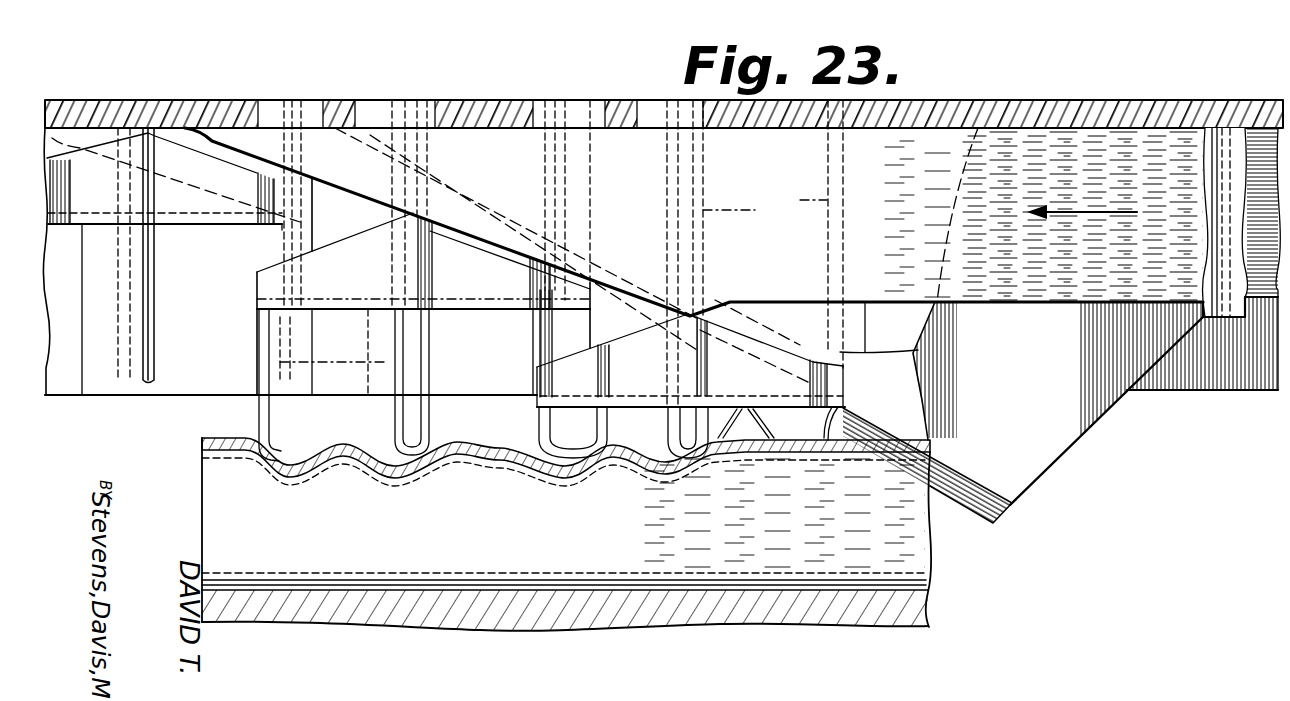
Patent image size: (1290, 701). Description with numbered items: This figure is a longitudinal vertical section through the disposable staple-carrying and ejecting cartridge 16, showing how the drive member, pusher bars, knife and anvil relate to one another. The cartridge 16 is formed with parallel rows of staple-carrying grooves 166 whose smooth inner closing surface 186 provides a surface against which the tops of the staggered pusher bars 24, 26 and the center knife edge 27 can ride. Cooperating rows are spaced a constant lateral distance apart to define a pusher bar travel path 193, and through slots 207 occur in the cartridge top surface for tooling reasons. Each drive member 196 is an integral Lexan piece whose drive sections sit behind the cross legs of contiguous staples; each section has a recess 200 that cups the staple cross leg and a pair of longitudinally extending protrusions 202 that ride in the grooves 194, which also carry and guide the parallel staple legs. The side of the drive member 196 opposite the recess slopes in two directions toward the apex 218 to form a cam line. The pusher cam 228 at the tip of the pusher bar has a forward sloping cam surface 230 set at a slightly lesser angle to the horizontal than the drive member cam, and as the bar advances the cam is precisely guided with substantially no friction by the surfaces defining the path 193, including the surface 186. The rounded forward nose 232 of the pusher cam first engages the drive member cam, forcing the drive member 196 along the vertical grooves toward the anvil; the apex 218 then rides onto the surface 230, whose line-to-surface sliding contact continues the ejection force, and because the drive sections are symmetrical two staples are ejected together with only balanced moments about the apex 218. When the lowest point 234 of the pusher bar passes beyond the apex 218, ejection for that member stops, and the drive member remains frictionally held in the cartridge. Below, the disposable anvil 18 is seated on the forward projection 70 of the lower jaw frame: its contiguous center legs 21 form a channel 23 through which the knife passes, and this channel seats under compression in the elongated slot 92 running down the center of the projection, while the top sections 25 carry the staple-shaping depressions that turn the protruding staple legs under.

The cartridge 16 is at (1058, 98).
The anvil 18 is at (353, 590).
The legs 21 is at (468, 543).
The channel 23 is at (235, 532).
The pusher bar 24 is at (213, 182).
The top sections 25 is at (213, 438).
The pusher bar 26 is at (1050, 282).
The knife edge 27 is at (1063, 430).
The forward projection 70 is at (563, 626).
The slot 92 is at (928, 563).
The staple-carrying grooves 166 is at (180, 375).
The closing surface 186 is at (937, 130).
The pusher bar travel path 193 is at (496, 366).
The grooves 194 is at (553, 283).
The drive member 196 is at (179, 236).
The recess 200 is at (331, 312).
The protrusions 202 is at (537, 378).
The through slots 207 is at (370, 112).
The apex 218 is at (402, 215).
The pusher cam 228 is at (617, 283).
The cam surface 230 is at (523, 257).
The rounded forward nose 232 is at (200, 134).
The lowest point 234 is at (686, 324).